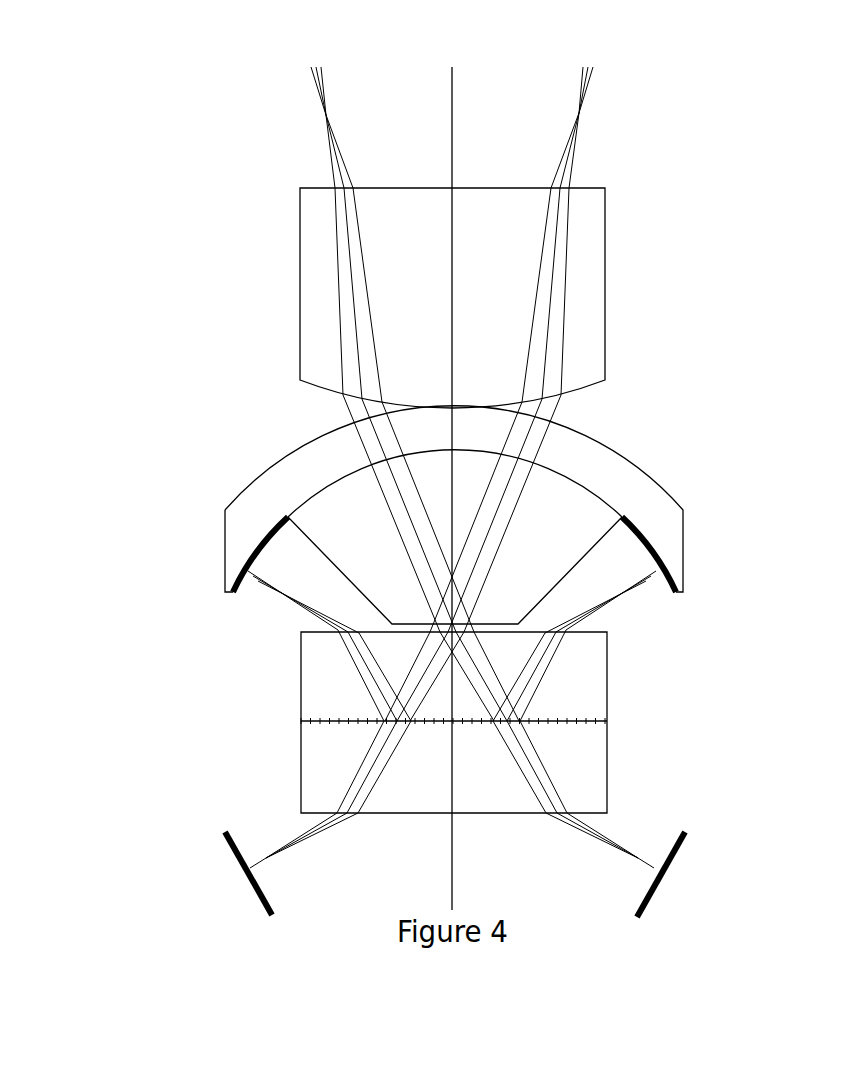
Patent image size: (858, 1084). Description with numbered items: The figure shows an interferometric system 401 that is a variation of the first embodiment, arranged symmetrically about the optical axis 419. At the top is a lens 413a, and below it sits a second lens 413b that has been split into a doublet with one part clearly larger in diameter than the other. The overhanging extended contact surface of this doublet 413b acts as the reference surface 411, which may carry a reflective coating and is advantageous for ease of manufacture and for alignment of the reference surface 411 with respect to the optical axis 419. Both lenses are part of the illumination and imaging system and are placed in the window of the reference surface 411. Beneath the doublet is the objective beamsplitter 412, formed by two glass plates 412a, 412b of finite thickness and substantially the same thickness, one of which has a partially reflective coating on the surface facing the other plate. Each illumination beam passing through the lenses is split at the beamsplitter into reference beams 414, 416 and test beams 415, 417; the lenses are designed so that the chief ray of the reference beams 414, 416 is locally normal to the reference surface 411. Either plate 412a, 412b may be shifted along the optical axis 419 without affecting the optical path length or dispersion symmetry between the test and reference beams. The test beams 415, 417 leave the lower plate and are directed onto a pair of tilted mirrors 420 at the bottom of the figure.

The interferometric system 401 is at (697, 194).
The reference surface 411 is at (260, 543).
The objective beamsplitter 412 is at (300, 720).
The glass plate 412a is at (582, 678).
The glass plate 412b is at (592, 767).
The lens 413a is at (600, 322).
The doublet lens 413b is at (625, 480).
The reference beam 414 is at (362, 665).
The test beam 415 is at (372, 760).
The reference beam 416 is at (535, 687).
The test beam 417 is at (535, 757).
The optical axis 419 is at (452, 307).
The mirror 420 is at (263, 898).